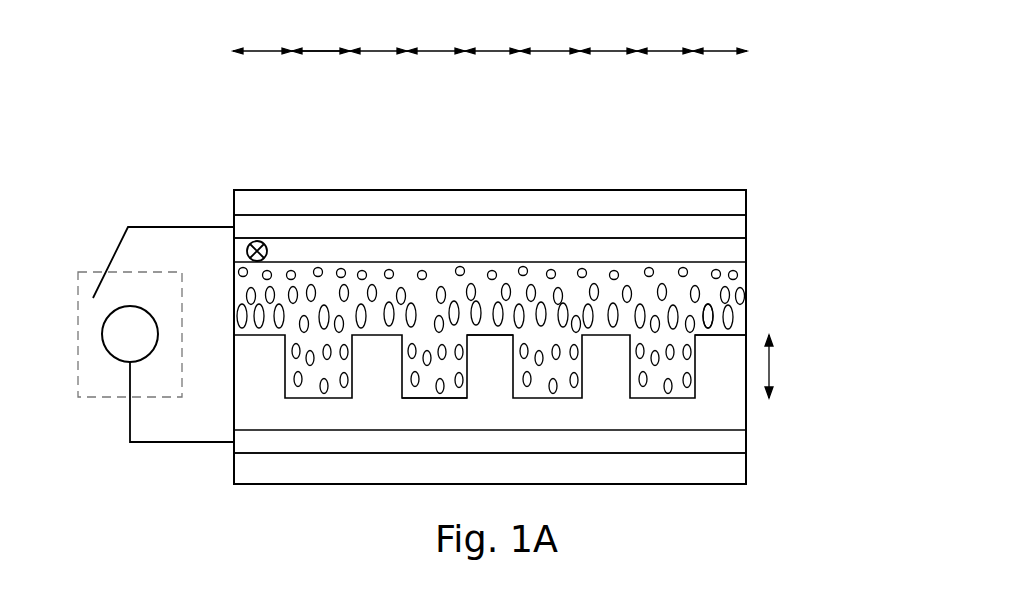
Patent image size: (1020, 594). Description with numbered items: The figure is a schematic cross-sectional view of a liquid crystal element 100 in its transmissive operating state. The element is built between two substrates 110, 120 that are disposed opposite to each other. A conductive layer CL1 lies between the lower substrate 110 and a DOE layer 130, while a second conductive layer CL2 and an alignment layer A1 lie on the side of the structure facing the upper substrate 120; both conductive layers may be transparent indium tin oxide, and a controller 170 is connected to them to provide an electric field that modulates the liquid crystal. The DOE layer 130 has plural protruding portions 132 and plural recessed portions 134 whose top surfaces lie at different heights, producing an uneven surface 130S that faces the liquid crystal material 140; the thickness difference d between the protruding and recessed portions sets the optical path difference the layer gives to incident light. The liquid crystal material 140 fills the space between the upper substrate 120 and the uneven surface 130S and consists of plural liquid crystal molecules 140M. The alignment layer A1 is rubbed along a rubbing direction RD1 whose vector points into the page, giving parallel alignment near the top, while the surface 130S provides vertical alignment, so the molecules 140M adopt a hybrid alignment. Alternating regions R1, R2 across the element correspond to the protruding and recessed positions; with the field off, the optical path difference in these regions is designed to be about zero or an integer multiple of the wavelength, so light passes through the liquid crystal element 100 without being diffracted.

The liquid crystal element 100 is at (115, 83).
The substrate 110 is at (736, 468).
The substrate 120 is at (736, 203).
The conductive layer CL1 is at (736, 445).
The conductive layer CL2 is at (736, 227).
The alignment layer A1 is at (736, 251).
The DOE layer 130 is at (527, 133).
The protruding portions 132 is at (484, 343).
The recessed portions 134 is at (438, 408).
The uneven surface 130S is at (707, 333).
The liquid crystal material 140 is at (736, 289).
The liquid crystal molecules 140M is at (700, 315).
The controller 170 is at (78, 325).
The rubbing direction RD1 is at (243, 247).
The region R1 is at (490, 35).
The region R2 is at (483, 34).
The thickness difference d is at (778, 366).